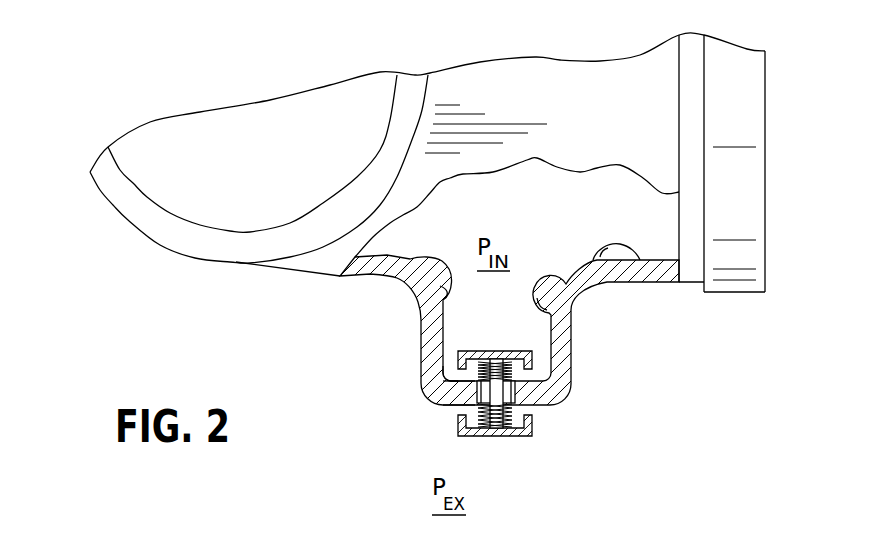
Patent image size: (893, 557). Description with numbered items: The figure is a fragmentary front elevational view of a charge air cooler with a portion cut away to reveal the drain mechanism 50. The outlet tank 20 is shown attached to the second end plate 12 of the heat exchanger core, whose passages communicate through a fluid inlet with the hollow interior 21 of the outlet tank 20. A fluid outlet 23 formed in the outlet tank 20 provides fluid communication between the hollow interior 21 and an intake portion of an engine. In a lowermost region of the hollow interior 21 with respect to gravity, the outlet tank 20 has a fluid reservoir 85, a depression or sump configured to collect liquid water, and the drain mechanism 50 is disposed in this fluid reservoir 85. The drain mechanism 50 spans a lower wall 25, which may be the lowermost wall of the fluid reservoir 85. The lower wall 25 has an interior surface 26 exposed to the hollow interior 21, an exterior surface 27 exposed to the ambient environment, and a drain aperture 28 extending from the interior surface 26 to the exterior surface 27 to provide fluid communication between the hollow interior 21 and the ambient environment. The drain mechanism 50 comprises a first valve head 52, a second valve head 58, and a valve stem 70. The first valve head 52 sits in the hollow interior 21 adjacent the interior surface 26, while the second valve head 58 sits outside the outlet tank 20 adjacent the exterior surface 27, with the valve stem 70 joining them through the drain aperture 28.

The second end plate 12 is at (731, 294).
The outlet tank 20 is at (189, 258).
The hollow interior 21 is at (514, 226).
The fluid outlet 23 is at (156, 172).
The lower wall 25 is at (442, 393).
The interior surface 26 is at (449, 377).
The exterior surface 27 is at (457, 406).
The drain aperture 28 is at (518, 392).
The drain mechanism 50 is at (540, 387).
The first valve head 52 is at (492, 351).
The second valve head 58 is at (493, 437).
The valve stem 70 is at (506, 377).
The fluid reservoir 85 is at (509, 353).